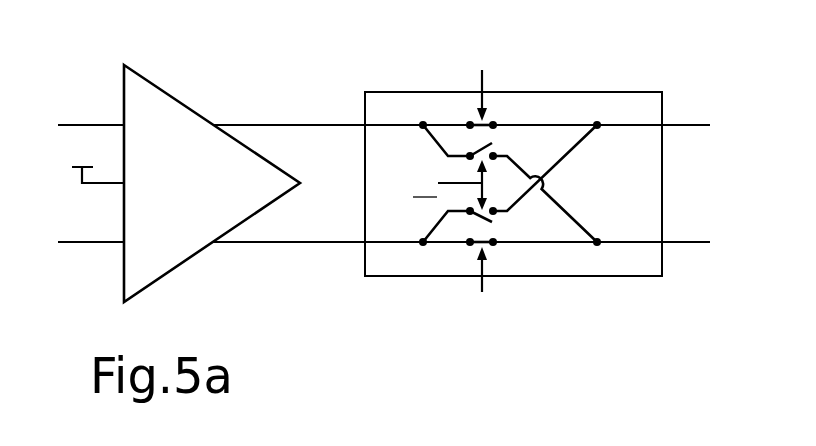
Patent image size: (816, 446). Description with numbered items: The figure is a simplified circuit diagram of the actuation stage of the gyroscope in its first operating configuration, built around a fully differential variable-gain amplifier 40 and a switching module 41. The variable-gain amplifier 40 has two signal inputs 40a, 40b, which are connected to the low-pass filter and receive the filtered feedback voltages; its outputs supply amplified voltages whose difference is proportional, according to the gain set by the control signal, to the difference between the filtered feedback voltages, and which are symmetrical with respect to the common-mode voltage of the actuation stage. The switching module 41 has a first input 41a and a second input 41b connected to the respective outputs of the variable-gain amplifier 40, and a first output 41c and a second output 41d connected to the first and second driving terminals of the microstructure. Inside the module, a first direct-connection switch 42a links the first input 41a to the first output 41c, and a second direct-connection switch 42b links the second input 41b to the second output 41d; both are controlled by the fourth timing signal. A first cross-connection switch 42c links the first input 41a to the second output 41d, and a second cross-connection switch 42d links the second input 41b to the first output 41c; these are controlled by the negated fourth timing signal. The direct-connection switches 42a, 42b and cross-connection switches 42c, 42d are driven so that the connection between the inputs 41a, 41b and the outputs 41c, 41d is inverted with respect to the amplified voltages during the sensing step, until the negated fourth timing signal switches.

The variable-gain amplifier 40 is at (175, 268).
The signal input 40a is at (59, 242).
The signal input 40b is at (59, 125).
The switching module 41 is at (365, 260).
The first input 41a is at (423, 244).
The second input 41b is at (423, 123).
The first output 41c is at (596, 244).
The second output 41d is at (597, 124).
The first direct-connection switch 42a is at (478, 245).
The second direct-connection switch 42b is at (487, 124).
The first cross-connection switch 42c is at (495, 224).
The second cross-connection switch 42d is at (495, 145).